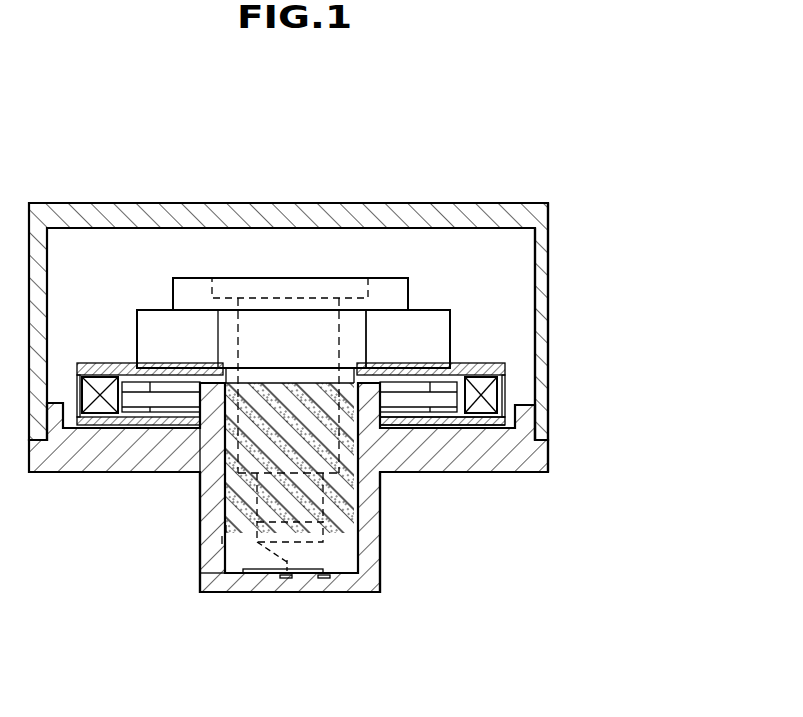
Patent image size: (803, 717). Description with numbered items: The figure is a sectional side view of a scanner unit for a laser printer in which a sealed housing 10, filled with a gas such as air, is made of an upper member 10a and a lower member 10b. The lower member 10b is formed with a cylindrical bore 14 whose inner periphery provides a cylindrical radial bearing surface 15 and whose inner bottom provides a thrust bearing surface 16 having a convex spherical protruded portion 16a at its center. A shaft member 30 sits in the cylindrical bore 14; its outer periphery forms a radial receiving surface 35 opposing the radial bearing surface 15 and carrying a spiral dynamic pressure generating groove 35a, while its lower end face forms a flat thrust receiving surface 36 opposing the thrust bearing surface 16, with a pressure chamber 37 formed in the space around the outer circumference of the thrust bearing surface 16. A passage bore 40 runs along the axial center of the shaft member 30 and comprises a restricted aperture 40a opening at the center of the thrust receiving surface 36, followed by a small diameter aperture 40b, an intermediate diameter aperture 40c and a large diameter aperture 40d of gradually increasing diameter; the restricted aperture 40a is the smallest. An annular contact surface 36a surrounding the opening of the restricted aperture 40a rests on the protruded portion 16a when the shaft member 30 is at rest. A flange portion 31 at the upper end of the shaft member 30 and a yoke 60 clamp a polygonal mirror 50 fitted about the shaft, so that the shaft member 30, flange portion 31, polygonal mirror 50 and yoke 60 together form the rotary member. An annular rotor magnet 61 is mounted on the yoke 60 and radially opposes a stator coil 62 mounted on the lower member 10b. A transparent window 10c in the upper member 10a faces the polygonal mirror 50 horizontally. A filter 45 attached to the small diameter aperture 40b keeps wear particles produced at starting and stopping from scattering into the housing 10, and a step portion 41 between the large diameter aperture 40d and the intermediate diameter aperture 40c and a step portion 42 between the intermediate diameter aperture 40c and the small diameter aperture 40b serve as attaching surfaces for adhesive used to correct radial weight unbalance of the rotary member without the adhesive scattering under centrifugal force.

The housing 10 is at (64, 200).
The upper member 10a is at (540, 243).
The lower member 10b is at (70, 460).
The window 10c is at (540, 330).
The cylindrical bore 14 is at (470, 473).
The radial bearing surface 15 is at (215, 440).
The thrust bearing surface 16 is at (263, 575).
The protruded portion 16a is at (268, 585).
The shaft member 30 is at (205, 593).
The flange portion 31 is at (183, 288).
The radial receiving surface 35 is at (232, 445).
The dynamic pressure generating groove 35a is at (228, 535).
The thrust receiving surface 36 is at (330, 595).
The annular contact surface 36a is at (292, 595).
The pressure chamber 37 is at (357, 592).
The passage bore 40 is at (335, 323).
The restricted aperture 40a is at (290, 565).
The small diameter aperture 40b is at (330, 506).
The intermediate diameter aperture 40c is at (340, 347).
The large diameter aperture 40d is at (372, 288).
The step portion 41 is at (228, 290).
The step portion 42 is at (222, 540).
The filter 45 is at (300, 548).
The polygonal mirror 50 is at (145, 322).
The yoke 60 is at (490, 365).
The rotor magnet 61 is at (493, 393).
The stator coil 62 is at (363, 452).